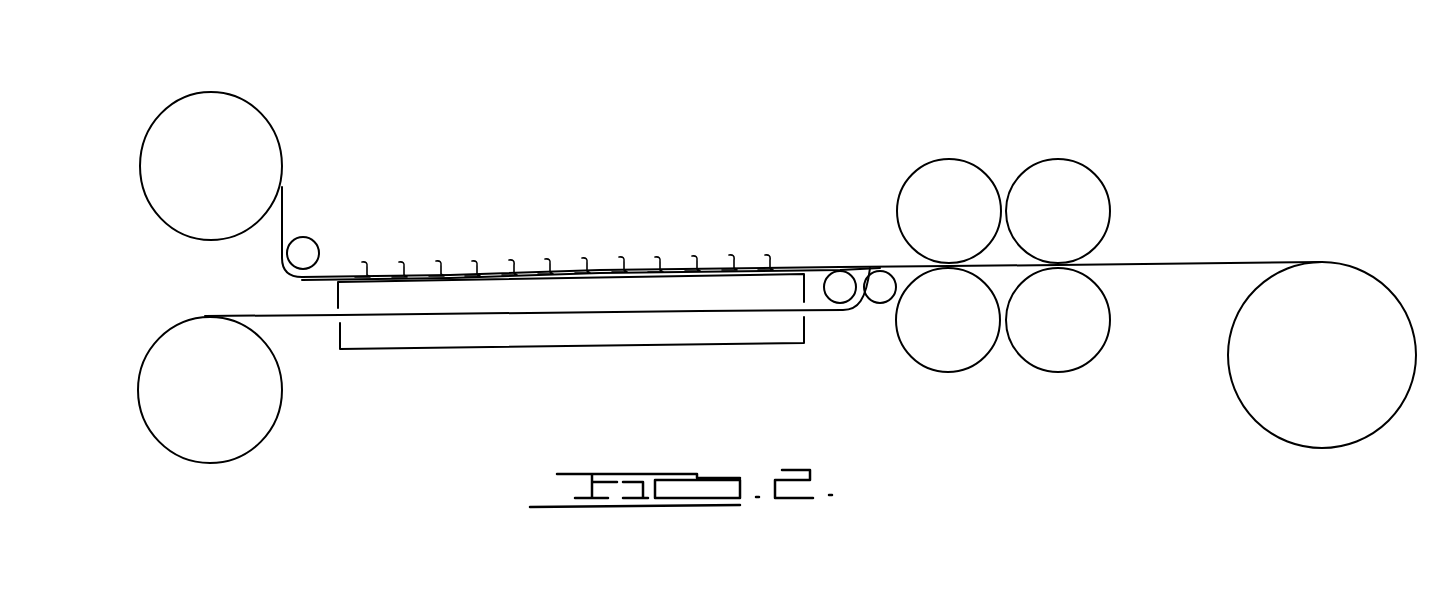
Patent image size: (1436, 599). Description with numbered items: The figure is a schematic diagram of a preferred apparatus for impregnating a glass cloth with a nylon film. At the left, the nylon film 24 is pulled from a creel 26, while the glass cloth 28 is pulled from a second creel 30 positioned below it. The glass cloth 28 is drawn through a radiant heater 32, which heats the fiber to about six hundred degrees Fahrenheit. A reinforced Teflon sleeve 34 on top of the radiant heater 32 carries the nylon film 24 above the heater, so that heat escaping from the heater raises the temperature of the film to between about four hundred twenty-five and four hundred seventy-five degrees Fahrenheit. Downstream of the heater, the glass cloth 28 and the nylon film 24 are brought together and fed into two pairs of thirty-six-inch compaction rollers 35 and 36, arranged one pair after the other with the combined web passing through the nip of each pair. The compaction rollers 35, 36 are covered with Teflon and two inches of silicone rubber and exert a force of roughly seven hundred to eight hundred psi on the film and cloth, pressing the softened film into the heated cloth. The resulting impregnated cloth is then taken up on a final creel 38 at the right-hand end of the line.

The nylon film 24 is at (283, 203).
The creel 26 is at (197, 105).
The glass cloth 28 is at (313, 317).
The creel 30 is at (223, 455).
The radiant heater 32 is at (483, 348).
The reinforced Teflon sleeve 34 is at (453, 273).
The compaction rollers 35 is at (900, 193).
The compaction rollers 36 is at (1110, 197).
The creel 38 is at (1257, 415).